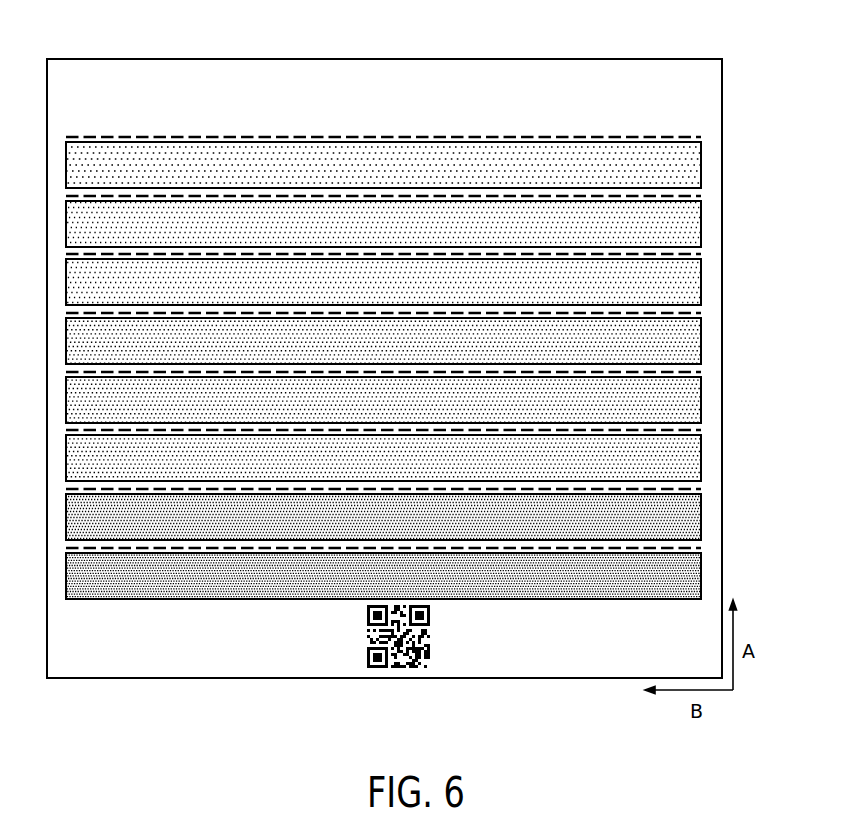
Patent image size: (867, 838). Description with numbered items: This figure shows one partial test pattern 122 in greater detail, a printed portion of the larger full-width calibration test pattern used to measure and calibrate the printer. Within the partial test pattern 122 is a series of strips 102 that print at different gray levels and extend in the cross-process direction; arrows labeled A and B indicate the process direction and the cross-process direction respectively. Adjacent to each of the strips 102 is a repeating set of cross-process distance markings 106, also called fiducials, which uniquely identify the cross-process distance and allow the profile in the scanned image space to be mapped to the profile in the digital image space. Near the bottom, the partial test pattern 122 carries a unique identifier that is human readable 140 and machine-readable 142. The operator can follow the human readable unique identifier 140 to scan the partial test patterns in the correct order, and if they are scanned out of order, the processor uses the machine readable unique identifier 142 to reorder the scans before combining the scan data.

The strips 102 is at (688, 161).
The cross-process distance markings 106 is at (177, 133).
The partial test pattern 122 is at (149, 684).
The human readable unique identifier 140 is at (264, 663).
The machine readable unique identifier 142 is at (453, 662).